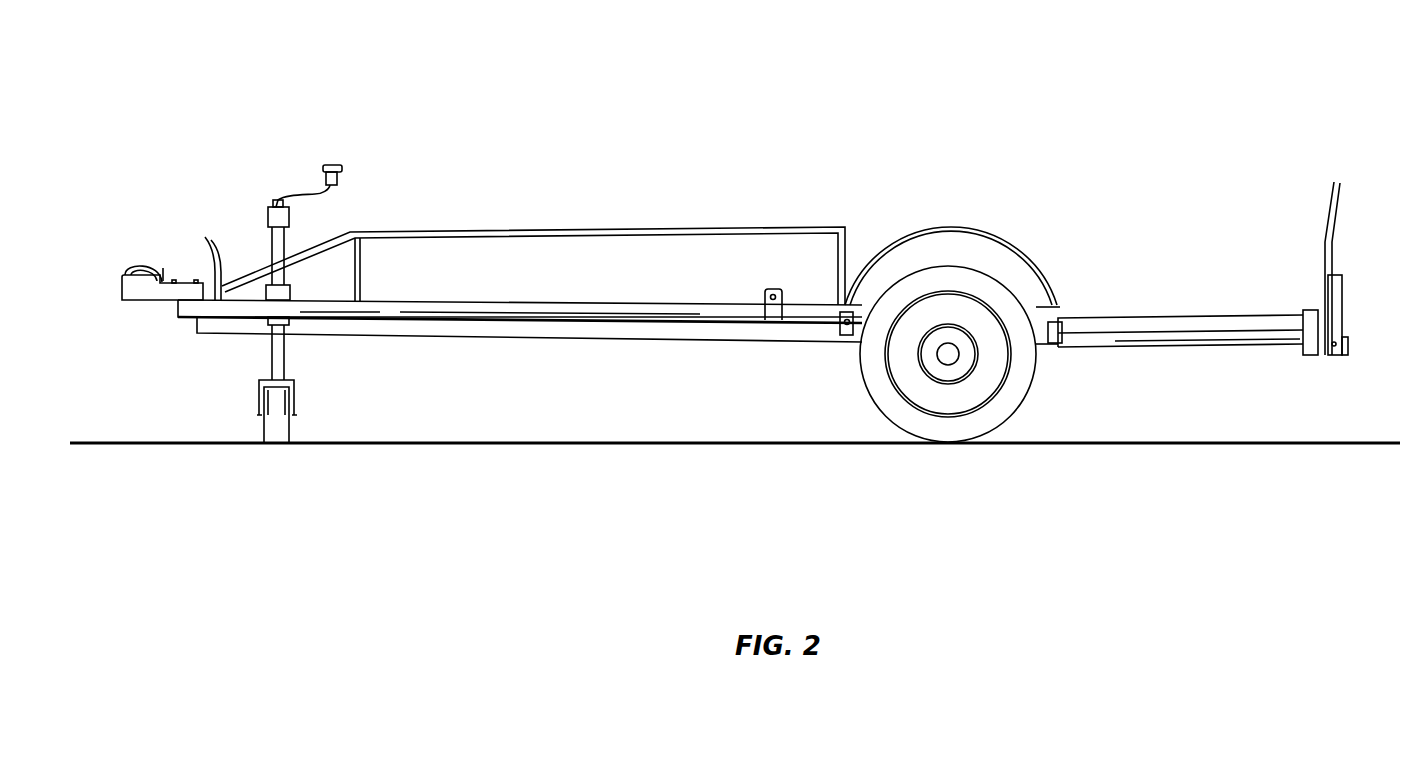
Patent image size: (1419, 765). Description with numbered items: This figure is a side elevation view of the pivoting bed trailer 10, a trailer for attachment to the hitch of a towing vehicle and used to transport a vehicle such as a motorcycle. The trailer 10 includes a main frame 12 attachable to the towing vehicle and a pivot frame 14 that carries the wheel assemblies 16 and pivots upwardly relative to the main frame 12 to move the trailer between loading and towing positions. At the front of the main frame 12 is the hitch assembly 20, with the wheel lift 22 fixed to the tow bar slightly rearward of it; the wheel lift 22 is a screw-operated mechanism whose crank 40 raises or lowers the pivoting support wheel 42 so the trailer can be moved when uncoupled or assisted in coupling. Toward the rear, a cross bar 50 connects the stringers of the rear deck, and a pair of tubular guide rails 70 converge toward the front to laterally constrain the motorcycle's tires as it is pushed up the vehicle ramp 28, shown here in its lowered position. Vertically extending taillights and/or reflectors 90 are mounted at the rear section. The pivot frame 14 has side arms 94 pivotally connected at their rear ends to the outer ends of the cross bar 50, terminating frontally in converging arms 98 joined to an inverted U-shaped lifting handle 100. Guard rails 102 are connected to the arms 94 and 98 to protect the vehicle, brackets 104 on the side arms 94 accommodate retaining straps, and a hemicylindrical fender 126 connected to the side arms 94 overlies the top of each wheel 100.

The pivoting bed trailer 10 is at (500, 80).
The main frame 12 is at (540, 350).
The pivot frame 14 is at (620, 300).
The wheel assemblies 16 is at (1043, 402).
The hitch assembly 20 is at (142, 306).
The wheel lift 22 is at (265, 235).
The vehicle ramp 28 is at (1350, 295).
The crank 40 is at (324, 170).
The pivoting support wheel 42 is at (272, 428).
The cross bar 50 is at (1057, 342).
The tubular guide rails 70 is at (1145, 322).
The taillights and/or reflectors 90 is at (1310, 345).
The side arms 94 is at (432, 308).
The converging arms 98 is at (323, 307).
The lifting handle 100 is at (207, 240).
The guard rails 102 is at (608, 228).
The brackets 104 is at (765, 293).
The hemicylindrical fender 126 is at (1035, 262).